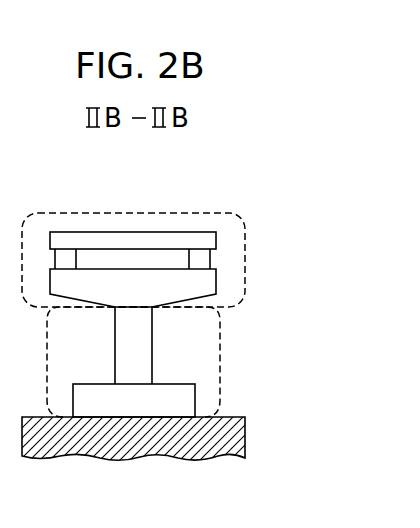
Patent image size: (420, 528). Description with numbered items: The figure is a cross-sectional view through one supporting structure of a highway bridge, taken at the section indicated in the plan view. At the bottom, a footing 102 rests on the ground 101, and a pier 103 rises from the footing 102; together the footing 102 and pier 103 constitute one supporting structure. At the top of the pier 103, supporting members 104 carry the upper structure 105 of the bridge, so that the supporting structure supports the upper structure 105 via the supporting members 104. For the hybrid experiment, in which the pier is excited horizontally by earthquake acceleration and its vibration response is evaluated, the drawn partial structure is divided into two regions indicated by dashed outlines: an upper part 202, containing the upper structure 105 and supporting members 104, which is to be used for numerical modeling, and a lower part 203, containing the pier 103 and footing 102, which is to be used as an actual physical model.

The ground 101 is at (133, 443).
The footing 102 is at (187, 400).
The pier 103 is at (143, 333).
The supporting member 104 is at (203, 262).
The upper structure 105 is at (172, 238).
The part to be used for numerical modeling 202 is at (133, 213).
The part to be used as an actual model 203 is at (220, 357).